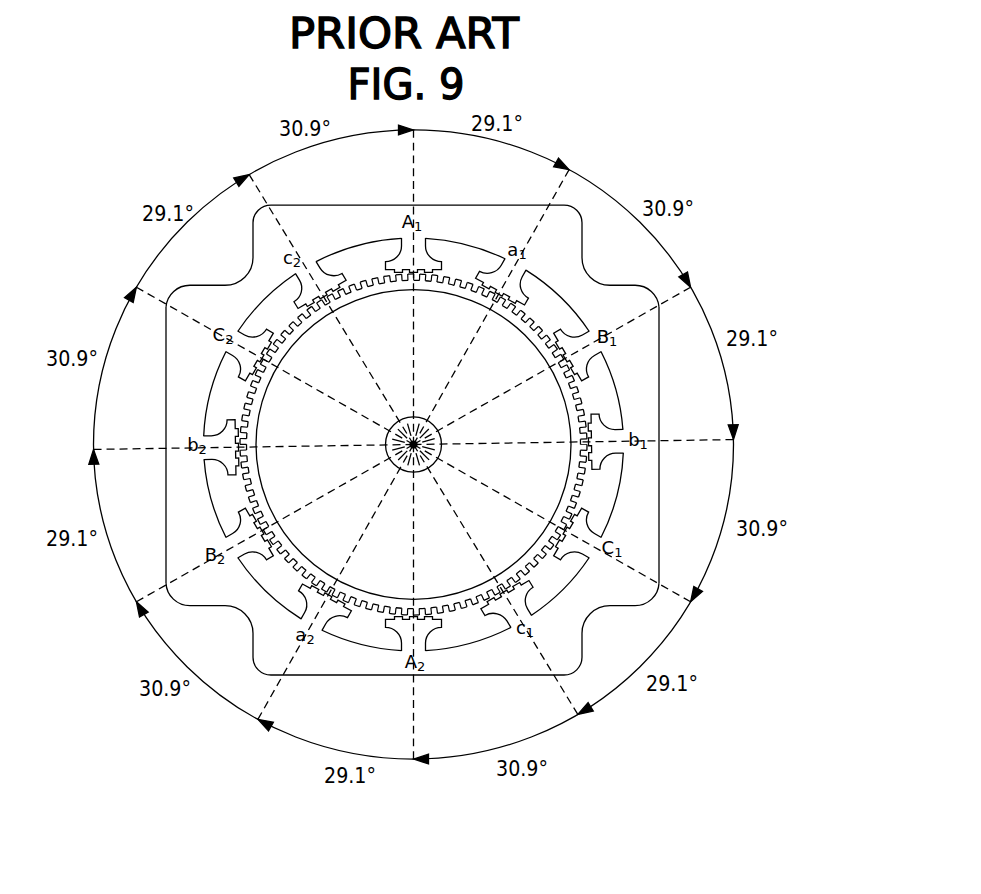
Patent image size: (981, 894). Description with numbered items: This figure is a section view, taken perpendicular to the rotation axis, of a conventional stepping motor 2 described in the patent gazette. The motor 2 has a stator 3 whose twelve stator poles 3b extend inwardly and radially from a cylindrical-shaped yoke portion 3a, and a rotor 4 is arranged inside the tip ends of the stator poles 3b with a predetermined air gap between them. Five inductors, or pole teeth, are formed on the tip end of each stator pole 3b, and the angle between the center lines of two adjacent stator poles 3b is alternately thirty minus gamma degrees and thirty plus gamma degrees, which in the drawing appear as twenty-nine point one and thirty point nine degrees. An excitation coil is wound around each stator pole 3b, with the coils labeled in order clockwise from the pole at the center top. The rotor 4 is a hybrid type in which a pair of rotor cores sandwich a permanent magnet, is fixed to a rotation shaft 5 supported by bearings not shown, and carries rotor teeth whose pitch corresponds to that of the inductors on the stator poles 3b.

The motor 2 is at (684, 562).
The stator 3 is at (448, 440).
The yoke portion 3a is at (645, 386).
The stator poles 3b is at (518, 290).
The rotor 4 is at (523, 477).
The rotation shaft 5 is at (408, 473).